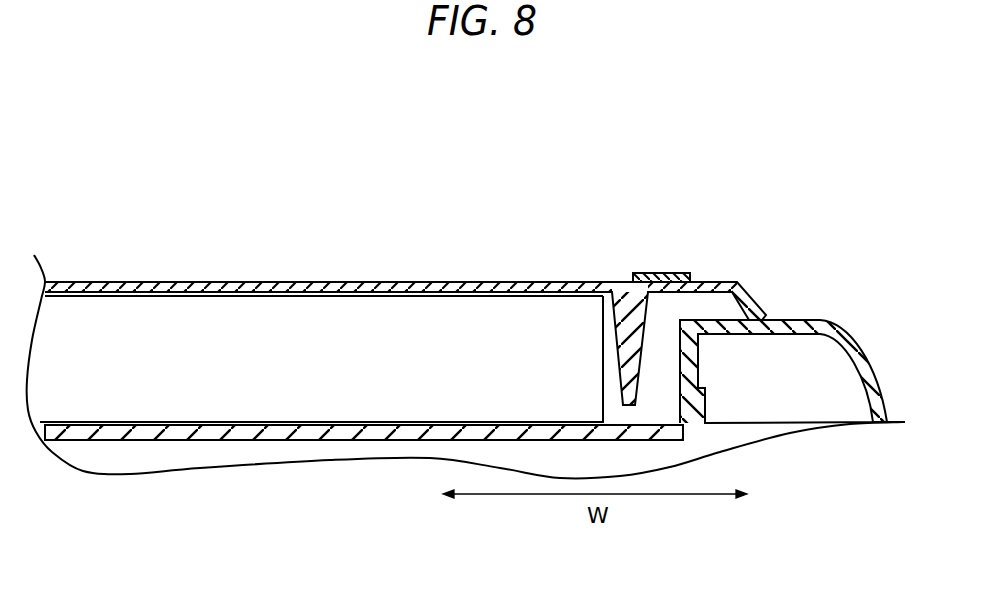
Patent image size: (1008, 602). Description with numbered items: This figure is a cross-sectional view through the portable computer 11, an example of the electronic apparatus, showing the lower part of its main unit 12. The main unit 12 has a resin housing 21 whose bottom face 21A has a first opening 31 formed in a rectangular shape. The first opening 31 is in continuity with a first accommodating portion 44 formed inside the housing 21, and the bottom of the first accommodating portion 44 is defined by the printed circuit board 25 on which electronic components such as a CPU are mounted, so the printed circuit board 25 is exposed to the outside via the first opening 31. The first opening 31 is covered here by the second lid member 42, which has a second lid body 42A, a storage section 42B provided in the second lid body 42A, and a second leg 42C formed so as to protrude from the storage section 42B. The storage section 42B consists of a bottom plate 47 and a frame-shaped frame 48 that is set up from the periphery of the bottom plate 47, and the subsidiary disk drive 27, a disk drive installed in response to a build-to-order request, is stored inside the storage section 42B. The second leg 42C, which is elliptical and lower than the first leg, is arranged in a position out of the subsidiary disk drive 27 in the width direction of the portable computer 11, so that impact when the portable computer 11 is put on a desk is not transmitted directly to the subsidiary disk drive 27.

The portable computer 11 is at (354, 168).
The main unit 12 is at (321, 290).
The housing 21 is at (792, 338).
The bottom face 21A is at (810, 322).
The printed circuit board 25 is at (260, 432).
The subsidiary disk drive 27 is at (315, 312).
The first opening 31 is at (721, 302).
The second lid member 42 is at (417, 301).
The second lid body 42A is at (707, 282).
The storage section 42B is at (258, 282).
The second leg 42C is at (668, 273).
The first accommodating portion 44 is at (611, 375).
The bottom plate 47 is at (435, 290).
The frame 48 is at (765, 318).